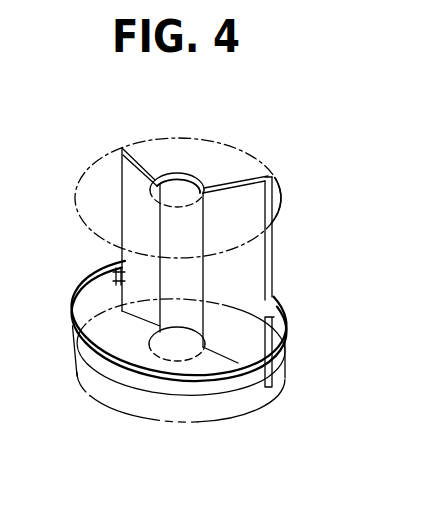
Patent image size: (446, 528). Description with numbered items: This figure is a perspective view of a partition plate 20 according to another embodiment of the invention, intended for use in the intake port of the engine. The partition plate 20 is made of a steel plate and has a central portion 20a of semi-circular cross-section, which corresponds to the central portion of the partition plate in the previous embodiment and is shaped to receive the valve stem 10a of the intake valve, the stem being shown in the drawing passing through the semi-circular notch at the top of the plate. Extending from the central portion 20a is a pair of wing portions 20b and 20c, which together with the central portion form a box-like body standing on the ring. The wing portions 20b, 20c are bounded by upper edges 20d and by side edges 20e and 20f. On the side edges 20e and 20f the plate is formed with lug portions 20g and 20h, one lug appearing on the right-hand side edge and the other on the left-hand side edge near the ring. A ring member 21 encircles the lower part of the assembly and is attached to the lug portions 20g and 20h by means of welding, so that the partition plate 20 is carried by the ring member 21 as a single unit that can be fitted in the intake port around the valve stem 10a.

The valve stem 10a is at (127, 150).
The partition plate 20 is at (173, 158).
The central portion 20a is at (181, 177).
The wing portion 20b is at (222, 250).
The wing portion 20c is at (134, 220).
The upper edges 20d is at (230, 183).
The side edge 20e is at (217, 240).
The side edge 20f is at (122, 203).
The lug portion 20g is at (280, 298).
The lug portion 20h is at (112, 275).
The ring member 21 is at (76, 346).